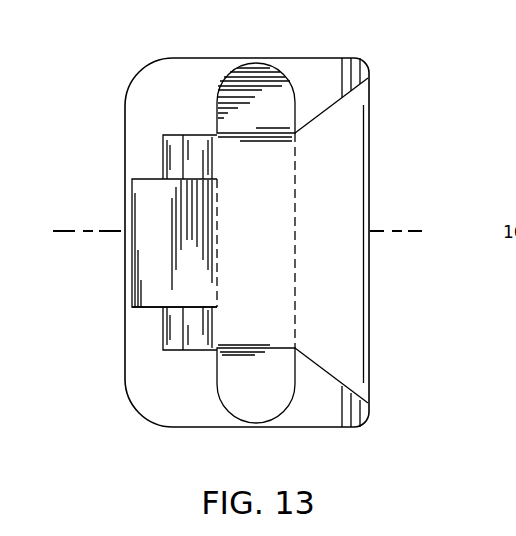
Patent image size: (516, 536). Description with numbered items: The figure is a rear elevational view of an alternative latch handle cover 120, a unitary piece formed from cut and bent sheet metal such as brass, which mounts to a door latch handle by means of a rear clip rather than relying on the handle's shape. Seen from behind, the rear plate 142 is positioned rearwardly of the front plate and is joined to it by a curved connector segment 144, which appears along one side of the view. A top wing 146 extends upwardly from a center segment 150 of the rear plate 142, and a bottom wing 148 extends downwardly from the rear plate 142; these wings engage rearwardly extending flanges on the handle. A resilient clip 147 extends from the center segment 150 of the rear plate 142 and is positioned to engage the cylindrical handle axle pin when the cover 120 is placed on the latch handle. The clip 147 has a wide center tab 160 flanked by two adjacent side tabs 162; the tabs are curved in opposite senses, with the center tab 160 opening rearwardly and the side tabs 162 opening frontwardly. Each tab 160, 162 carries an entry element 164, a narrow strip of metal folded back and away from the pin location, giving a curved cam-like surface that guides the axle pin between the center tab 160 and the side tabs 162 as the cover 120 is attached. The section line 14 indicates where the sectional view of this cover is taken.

The latch handle cover 120 is at (96, 105).
The rear plate 142 is at (318, 254).
The curved connector segment 144 is at (371, 304).
The top wing 146 is at (282, 72).
The resilient clip 147 is at (152, 308).
The bottom wing 148 is at (218, 390).
The center segment 150 is at (274, 274).
The center tab 160 is at (125, 280).
The side tabs 162 is at (163, 155).
The entry element 164 is at (173, 133).
The section line 14- 14 is at (67, 246).